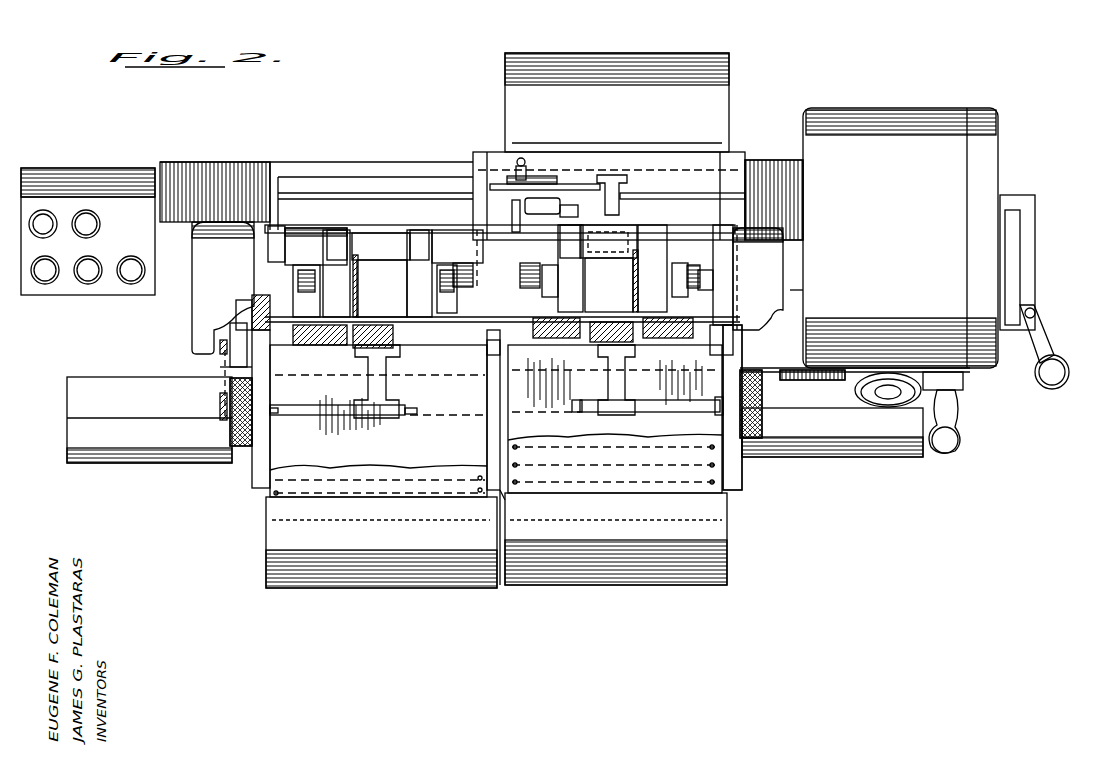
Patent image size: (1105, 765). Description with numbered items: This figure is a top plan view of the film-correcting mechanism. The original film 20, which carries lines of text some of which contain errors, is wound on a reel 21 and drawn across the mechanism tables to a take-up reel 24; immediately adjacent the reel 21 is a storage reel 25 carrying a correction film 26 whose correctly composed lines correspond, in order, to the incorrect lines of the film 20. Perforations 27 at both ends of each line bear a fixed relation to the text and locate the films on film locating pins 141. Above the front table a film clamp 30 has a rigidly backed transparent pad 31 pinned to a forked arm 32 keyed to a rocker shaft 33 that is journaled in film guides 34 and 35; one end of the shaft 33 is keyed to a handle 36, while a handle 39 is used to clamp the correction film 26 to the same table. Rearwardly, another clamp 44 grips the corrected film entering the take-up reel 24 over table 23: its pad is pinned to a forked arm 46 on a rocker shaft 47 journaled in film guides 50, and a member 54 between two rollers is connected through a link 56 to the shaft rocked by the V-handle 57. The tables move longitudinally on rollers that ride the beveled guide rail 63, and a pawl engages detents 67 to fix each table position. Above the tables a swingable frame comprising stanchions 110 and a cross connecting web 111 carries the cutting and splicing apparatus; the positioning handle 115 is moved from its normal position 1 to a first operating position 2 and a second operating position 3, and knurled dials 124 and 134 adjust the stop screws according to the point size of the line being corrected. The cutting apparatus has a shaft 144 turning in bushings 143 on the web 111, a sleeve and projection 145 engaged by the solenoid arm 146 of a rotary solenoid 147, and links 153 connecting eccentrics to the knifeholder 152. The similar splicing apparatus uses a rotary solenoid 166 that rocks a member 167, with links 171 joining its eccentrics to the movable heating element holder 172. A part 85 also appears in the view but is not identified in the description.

The normal position I 1 is at (977, 311).
The operating position II 2 is at (998, 281).
The operating position III 3 is at (998, 218).
The film 20 is at (702, 488).
The reel 21 is at (728, 520).
The mechanism table 23 is at (722, 160).
The take-up reel 24 is at (651, 117).
The storage reel 25 is at (268, 540).
The correction film 26 is at (327, 494).
The perforations 27 is at (478, 490).
The film clamp 30 is at (636, 350).
The transparent pad 31 is at (592, 342).
The forked arm 32 is at (396, 352).
The rocker shaft 33 is at (308, 412).
The film guide 34 is at (742, 477).
The film guide 35 is at (503, 522).
The handle 36 is at (764, 393).
The handle 39 is at (240, 448).
The clamp 44 is at (566, 168).
The forked arm 46 is at (611, 212).
The rocker shaft 47 is at (685, 190).
The film guides 50 is at (740, 160).
The member 54 is at (512, 210).
The link 56 is at (537, 208).
The V-handle 57 is at (518, 175).
The guide rail 63 is at (158, 463).
The detents 67 is at (275, 407).
The handle 85 is at (960, 434).
The stanchions 110 is at (276, 235).
The cross connecting web 111 is at (312, 236).
The positioning handle 115 is at (1065, 362).
The knurled dial 124 is at (816, 380).
The calibrated knurled dial 134 is at (858, 395).
The film locating pins 141 is at (475, 322).
The bushings 143 is at (407, 258).
The shaft 144 is at (640, 268).
The sleeve and projection 145 is at (735, 285).
The solenoid arm 146 is at (735, 266).
The rotary solenoid 147 is at (790, 290).
The knifeholder 152 is at (530, 263).
The links 153 is at (548, 292).
The rotary solenoid 166 is at (192, 285).
The member 167 is at (381, 275).
The links 171 is at (312, 272).
The heating element holder 172 is at (460, 258).